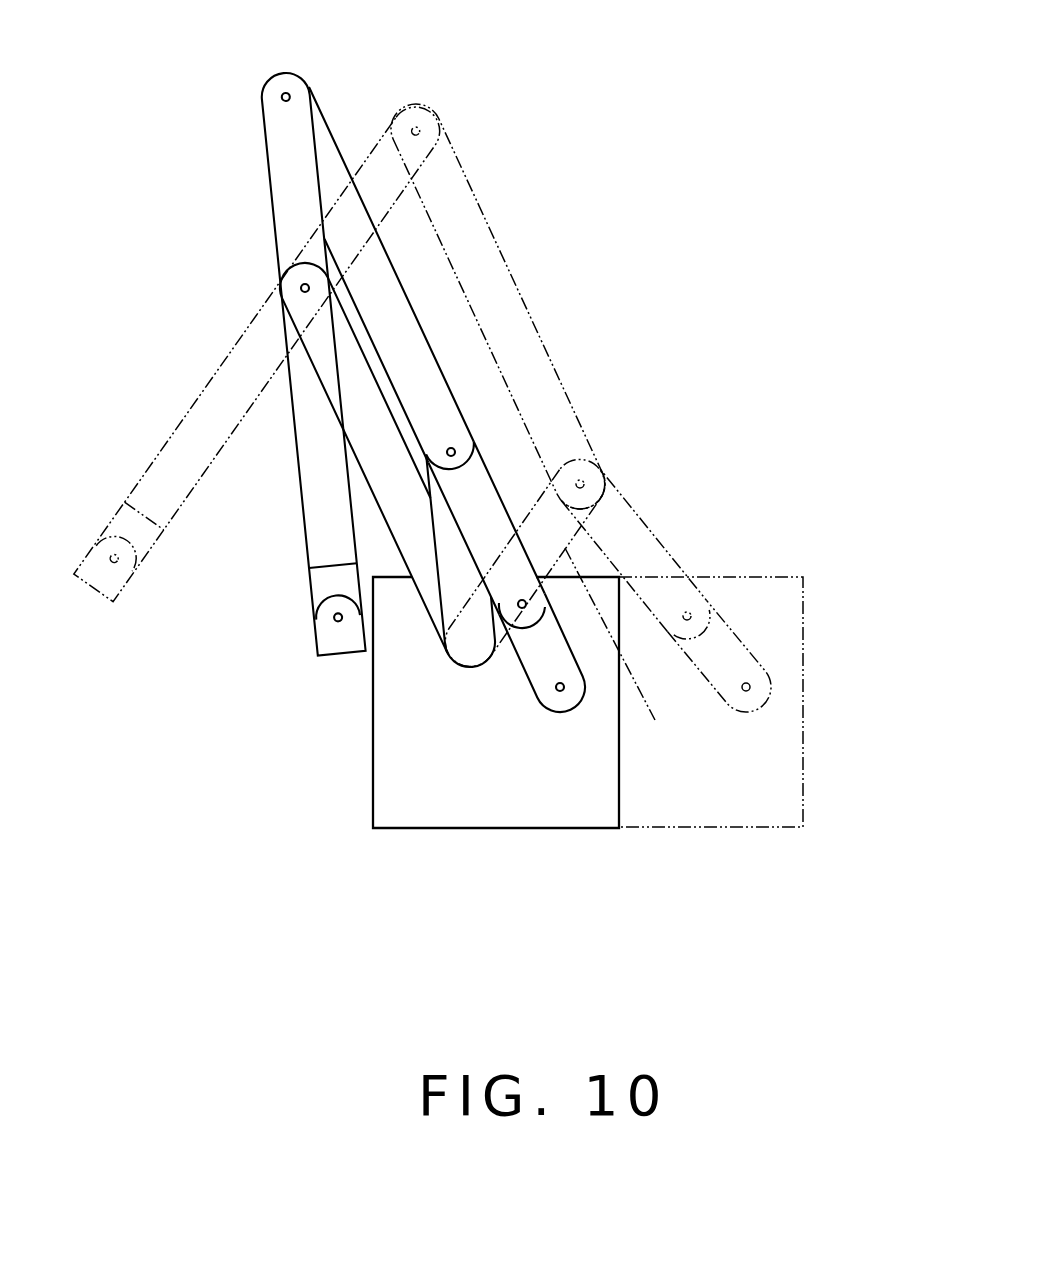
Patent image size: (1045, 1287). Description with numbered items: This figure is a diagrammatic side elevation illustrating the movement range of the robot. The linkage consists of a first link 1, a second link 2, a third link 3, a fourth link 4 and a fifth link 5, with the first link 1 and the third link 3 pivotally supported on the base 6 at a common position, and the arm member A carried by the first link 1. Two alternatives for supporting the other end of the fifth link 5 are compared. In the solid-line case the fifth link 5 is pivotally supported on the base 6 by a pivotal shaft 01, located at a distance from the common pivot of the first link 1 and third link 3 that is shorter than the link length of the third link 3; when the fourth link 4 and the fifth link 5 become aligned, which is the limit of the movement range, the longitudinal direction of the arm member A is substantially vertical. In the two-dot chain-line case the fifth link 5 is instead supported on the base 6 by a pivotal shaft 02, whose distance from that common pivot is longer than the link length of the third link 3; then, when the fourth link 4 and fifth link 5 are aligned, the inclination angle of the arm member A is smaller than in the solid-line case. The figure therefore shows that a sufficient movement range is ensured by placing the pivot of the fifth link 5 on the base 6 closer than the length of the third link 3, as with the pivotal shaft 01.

The first link 1 is at (320, 380).
The second link 2 is at (337, 137).
The third link 3 is at (440, 592).
The fourth link 4 is at (500, 495).
The fifth link 5 is at (573, 652).
The base 6 is at (373, 793).
The pivotal shaft O1 01 is at (557, 693).
The pivotal shaft O2 02 is at (750, 687).
The arm member A is at (142, 475).